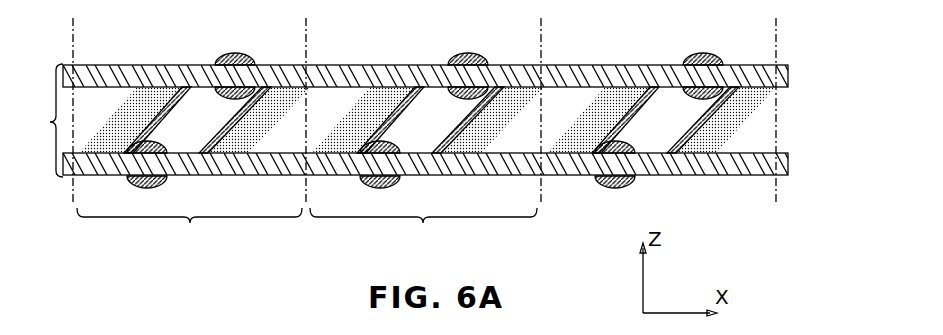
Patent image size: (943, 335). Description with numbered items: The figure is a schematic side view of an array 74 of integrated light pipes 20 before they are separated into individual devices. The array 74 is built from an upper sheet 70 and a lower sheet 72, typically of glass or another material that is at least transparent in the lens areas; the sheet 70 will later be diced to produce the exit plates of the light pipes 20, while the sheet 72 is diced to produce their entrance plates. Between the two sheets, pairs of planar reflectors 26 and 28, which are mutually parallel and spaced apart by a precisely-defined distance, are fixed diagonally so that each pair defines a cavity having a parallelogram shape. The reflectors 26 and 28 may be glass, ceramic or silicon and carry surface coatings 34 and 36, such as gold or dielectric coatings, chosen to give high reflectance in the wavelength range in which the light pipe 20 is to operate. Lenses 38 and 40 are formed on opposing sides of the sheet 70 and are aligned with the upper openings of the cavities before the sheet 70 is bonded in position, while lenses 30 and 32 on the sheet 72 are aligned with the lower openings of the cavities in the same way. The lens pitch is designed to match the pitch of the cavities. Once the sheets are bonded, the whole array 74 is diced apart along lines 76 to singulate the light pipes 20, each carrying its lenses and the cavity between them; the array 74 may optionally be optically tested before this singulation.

The light pipe 20 is at (307, 229).
The planar reflector 26 is at (597, 118).
The planar reflector 28 is at (730, 120).
The lens 30 is at (612, 184).
The lens 32 is at (620, 146).
The surface coating 34 is at (622, 104).
The surface coating 36 is at (702, 130).
The lens 38 is at (712, 97).
The lens 40 is at (705, 55).
The sheet 70 is at (788, 73).
The sheet 72 is at (788, 163).
The array 74 is at (44, 120).
The dicing line 76 is at (73, 45).